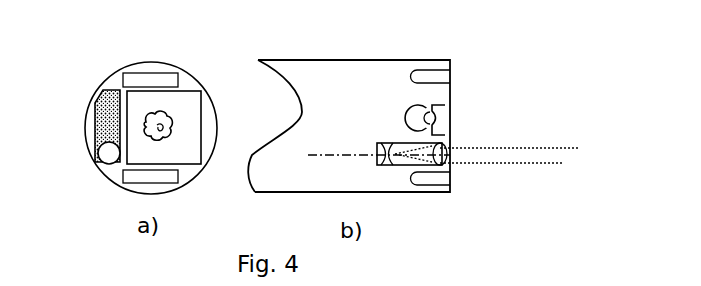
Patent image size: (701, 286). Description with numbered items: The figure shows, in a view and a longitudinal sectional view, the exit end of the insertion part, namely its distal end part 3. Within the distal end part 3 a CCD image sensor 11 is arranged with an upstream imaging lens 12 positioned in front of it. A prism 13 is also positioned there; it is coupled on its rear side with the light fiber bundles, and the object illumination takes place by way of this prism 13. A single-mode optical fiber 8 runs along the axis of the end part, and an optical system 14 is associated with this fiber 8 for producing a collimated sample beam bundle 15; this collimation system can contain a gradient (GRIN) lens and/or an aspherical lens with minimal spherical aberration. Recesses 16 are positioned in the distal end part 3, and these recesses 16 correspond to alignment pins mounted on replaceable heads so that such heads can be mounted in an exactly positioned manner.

The distal end part 3 is at (367, 73).
The single-mode optical fiber 8 is at (332, 156).
The CCD image sensor 11 is at (186, 108).
The imaging lens 12 is at (170, 137).
The prism 13 is at (100, 115).
The optical system 14 is at (110, 153).
The collimated sample beam bundle 15 is at (552, 156).
The recesses 16 is at (145, 80).